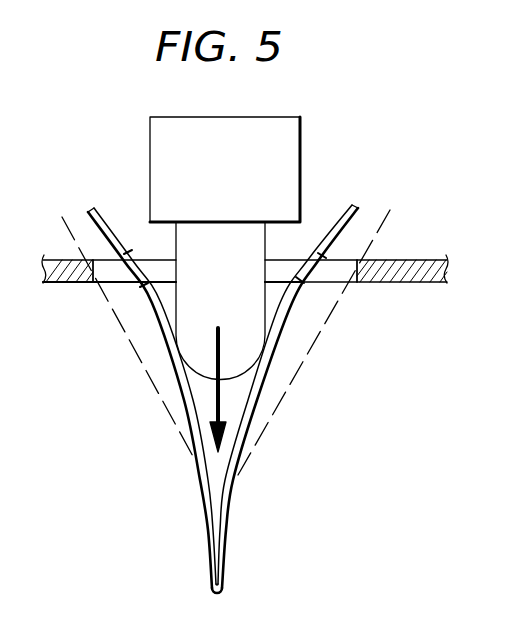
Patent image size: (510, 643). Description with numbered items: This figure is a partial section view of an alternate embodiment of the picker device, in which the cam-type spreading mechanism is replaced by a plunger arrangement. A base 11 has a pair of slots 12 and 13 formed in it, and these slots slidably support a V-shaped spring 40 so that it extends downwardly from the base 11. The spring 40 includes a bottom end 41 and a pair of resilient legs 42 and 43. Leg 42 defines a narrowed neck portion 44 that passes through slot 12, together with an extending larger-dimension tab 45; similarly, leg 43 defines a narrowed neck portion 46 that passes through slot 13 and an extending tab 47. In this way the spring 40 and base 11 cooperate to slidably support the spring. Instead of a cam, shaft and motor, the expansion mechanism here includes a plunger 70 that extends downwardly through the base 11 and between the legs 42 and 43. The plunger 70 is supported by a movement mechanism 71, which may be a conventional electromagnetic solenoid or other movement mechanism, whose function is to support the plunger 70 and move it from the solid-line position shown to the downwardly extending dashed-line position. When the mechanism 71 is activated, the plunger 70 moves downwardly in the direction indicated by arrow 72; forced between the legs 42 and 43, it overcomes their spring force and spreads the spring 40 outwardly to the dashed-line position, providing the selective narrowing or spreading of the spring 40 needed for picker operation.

The base 11 is at (400, 268).
The slot 12 is at (350, 286).
The slot 13 is at (106, 283).
The spring 40 is at (225, 370).
The bottom end 41 is at (222, 592).
The leg 42 is at (233, 470).
The leg 43 is at (193, 445).
The narrowed neck portion 44 is at (305, 260).
The tab 45 is at (328, 243).
The narrowed neck portion 46 is at (132, 252).
The tab 47 is at (91, 208).
The plunger 70 is at (255, 333).
The movement mechanism 71 is at (248, 175).
The arrow 72 is at (222, 348).